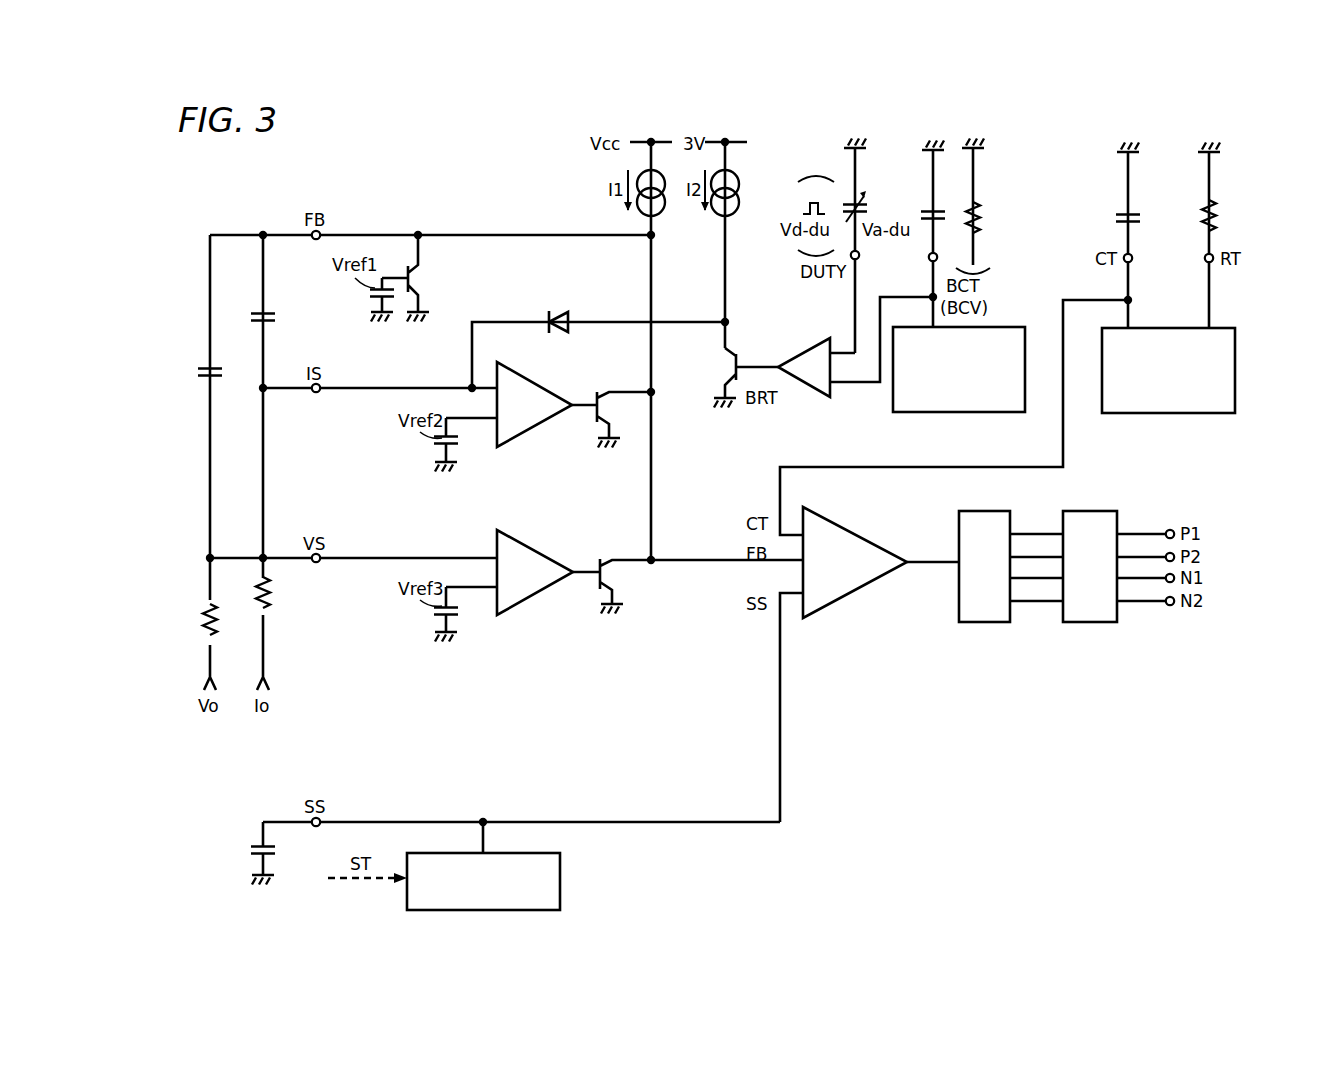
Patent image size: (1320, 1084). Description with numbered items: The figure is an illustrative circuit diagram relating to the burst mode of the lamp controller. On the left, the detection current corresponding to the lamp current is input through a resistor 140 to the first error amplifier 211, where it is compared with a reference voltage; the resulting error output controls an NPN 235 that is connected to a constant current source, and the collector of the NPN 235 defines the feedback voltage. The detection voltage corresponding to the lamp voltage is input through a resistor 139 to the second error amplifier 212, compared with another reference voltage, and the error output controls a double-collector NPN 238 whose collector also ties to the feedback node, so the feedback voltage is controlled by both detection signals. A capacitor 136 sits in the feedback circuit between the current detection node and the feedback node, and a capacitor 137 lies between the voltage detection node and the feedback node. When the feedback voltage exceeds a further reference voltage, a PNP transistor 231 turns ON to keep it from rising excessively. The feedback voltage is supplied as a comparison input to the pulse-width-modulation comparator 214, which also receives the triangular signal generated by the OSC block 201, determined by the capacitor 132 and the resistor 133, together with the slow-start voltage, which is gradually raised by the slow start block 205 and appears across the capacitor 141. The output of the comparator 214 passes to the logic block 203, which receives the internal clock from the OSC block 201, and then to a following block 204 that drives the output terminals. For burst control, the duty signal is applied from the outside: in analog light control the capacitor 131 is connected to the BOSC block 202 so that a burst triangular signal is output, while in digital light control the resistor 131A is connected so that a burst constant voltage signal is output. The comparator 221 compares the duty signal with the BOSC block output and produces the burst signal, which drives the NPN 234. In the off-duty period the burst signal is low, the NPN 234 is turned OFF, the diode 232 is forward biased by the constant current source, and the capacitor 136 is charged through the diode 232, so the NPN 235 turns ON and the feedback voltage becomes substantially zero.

The capacitor 131 is at (925, 217).
The resistor 131A is at (980, 216).
The capacitor 132 is at (1115, 218).
The resistor 133 is at (1218, 216).
The capacitor 136 is at (277, 317).
The capacitor 137 is at (218, 366).
The resistor 139 is at (202, 609).
The resistor 140 is at (271, 604).
The capacitor 141 is at (246, 850).
The OSC block 201 is at (1165, 413).
The BOSC block 202 is at (1010, 327).
The logic block 203 is at (985, 622).
The output driver block 204 is at (1090, 622).
The slow start block 205 is at (560, 878).
The first error amplifier 211 is at (528, 438).
The second error amplifier 212 is at (528, 606).
The PWM comparator 214 is at (856, 528).
The comparator 221 is at (812, 347).
The PNP transistor 231 is at (420, 284).
The diode 232 is at (558, 313).
The NPN 234 is at (733, 349).
The NPN 235 is at (600, 394).
The double-collector NPN 238 is at (603, 562).